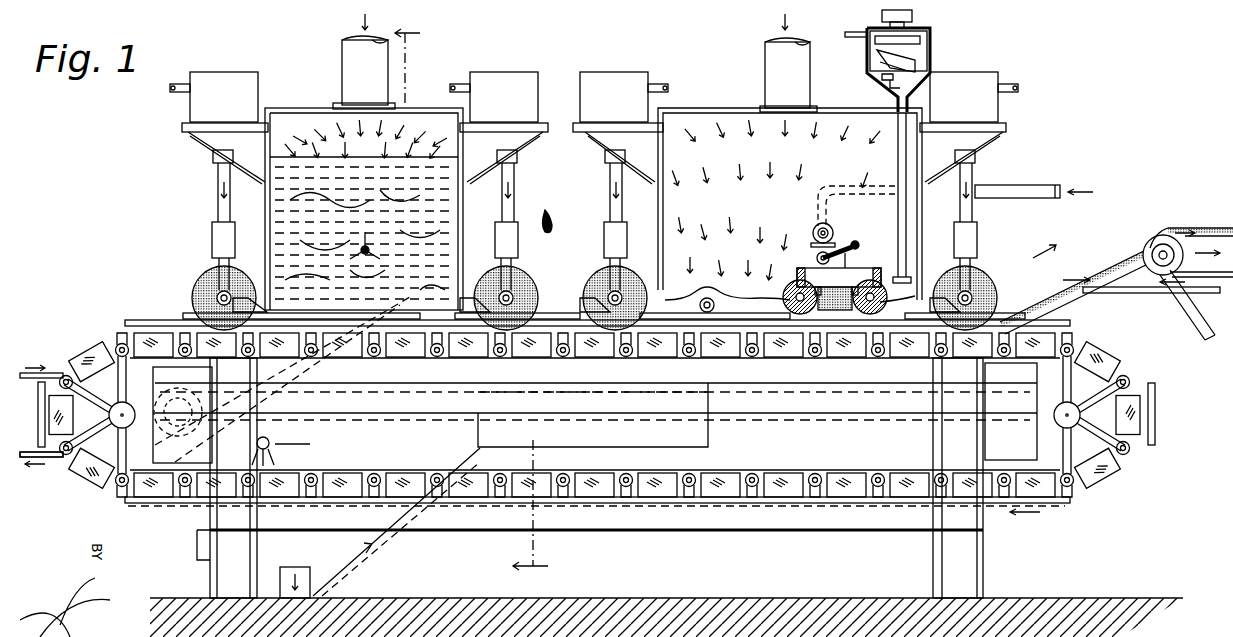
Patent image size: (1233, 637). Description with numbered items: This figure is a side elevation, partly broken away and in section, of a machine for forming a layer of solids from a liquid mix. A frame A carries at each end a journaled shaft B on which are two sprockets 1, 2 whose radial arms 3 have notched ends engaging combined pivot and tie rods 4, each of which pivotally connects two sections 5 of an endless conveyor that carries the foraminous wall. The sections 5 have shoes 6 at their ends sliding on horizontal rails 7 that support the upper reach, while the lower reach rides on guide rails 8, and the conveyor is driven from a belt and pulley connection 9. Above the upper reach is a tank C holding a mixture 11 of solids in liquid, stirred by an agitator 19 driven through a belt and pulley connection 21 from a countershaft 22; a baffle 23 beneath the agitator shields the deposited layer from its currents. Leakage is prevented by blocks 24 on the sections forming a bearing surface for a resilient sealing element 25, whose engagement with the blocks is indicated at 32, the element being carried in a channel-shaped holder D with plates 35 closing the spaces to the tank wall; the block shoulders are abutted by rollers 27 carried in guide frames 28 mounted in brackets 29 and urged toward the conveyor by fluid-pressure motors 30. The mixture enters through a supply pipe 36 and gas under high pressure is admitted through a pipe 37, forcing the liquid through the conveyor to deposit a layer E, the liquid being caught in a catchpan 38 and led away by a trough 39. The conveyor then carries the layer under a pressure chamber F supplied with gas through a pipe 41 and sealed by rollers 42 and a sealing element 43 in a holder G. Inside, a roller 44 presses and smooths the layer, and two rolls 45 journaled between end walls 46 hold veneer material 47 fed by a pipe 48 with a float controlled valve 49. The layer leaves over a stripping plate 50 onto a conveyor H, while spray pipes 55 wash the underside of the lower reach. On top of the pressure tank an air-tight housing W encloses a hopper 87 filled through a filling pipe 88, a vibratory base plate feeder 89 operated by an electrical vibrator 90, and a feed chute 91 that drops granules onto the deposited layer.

The sprocket 1 is at (68, 470).
The sprocket 2 is at (1132, 492).
The radial arm 3 is at (70, 380).
The combined pivot and tie rod 4 is at (437, 473).
The conveyor section 5 is at (120, 343).
The shoe 6 is at (458, 362).
The horizontal rail 7 is at (465, 372).
The guide rail 8 is at (783, 524).
The belt and pulley connection 9 is at (130, 505).
The mixture 11 is at (265, 199).
The agitator 19 is at (212, 234).
The belt and pulley connection 21 is at (330, 360).
The countershaft 22 is at (268, 442).
The baffle 23 is at (245, 268).
The block 24 is at (85, 478).
The resilient sealing element 25 is at (440, 365).
The roller 27 is at (189, 291).
The guide frame 28 is at (216, 170).
The bracket 29 is at (265, 217).
The fluid-pressure motor 30 is at (240, 84).
The strip engagement with blocks 32 is at (420, 318).
The plate 35 is at (470, 330).
The supply pipe 36 is at (547, 210).
The gas pipe 37 is at (345, 46).
The catchpan 38 is at (670, 447).
The trough 39 is at (603, 447).
The pipe 41 is at (765, 70).
The roller 42 is at (604, 275).
The sealing element 43 is at (183, 313).
The roller 44 is at (690, 300).
The roll 45 is at (800, 316).
The end wall 46 is at (850, 275).
The veneer material 47 is at (795, 280).
The pipe 48 is at (1045, 188).
The float controlled valve 49 is at (839, 224).
The stripping plate 50 is at (1120, 255).
The spray pipe 55 is at (278, 450).
The hopper 87 is at (877, 30).
The filling pipe 88 is at (912, 16).
The vibratory base plate feeder 89 is at (919, 70).
The electrical vibrator 90 is at (885, 82).
The feed chute 91 is at (925, 120).
The frame A is at (226, 549).
The shaft B is at (600, 323).
The tank C is at (277, 105).
The channel-shaped holder D is at (395, 360).
The deposited layer E is at (1081, 260).
The pressure chamber F is at (935, 157).
The holder G is at (835, 320).
The conveyor H is at (1205, 225).
The air-tight housing W is at (932, 32).